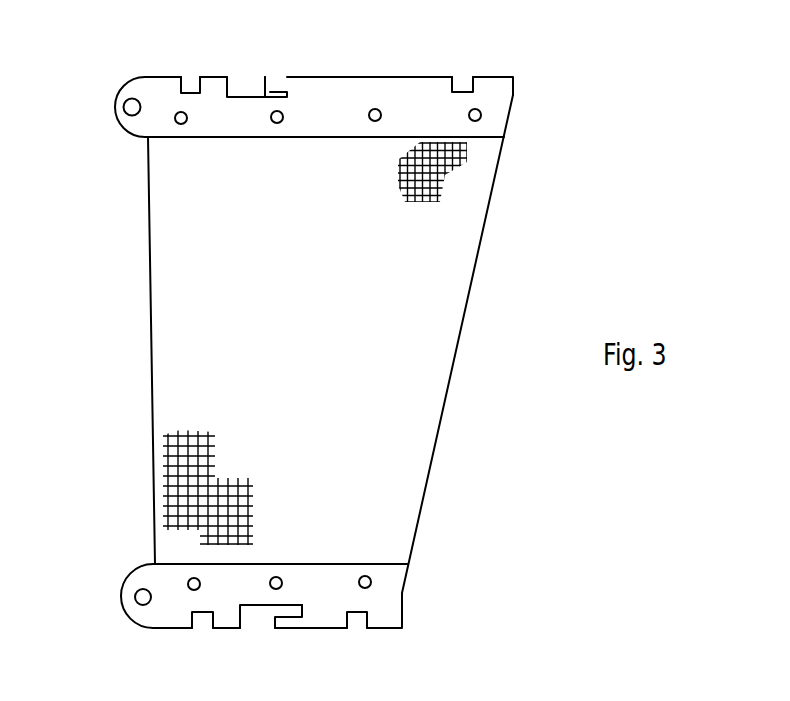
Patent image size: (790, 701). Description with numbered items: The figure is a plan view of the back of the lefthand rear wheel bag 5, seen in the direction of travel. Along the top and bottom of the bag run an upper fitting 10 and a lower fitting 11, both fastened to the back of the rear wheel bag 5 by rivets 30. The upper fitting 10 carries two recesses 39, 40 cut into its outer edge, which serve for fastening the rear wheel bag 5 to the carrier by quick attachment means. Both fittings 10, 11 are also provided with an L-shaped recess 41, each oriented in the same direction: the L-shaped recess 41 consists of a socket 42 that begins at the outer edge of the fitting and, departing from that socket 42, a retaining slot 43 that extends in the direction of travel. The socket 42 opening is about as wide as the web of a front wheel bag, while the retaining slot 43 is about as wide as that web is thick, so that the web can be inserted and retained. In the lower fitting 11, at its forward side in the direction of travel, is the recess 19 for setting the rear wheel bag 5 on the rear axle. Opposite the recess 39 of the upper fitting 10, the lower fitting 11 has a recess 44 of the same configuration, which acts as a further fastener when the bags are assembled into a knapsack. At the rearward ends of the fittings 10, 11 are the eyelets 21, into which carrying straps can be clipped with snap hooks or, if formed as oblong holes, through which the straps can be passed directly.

The rear wheel bag 5 is at (130, 316).
The upper fitting 10 is at (498, 143).
The lower fitting 11 is at (393, 580).
The recess 19 is at (361, 633).
The eyelets 21 is at (138, 596).
The rivets 30 is at (381, 114).
The recess 39 is at (189, 70).
The recess 40 is at (467, 64).
The L-shaped recess 41 is at (245, 110).
The socket 42 is at (251, 72).
The retaining slot 43 is at (270, 92).
The recess 44 is at (199, 635).